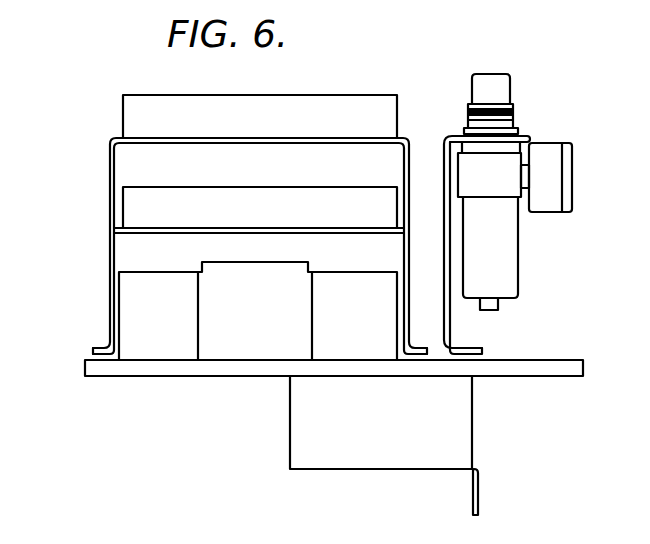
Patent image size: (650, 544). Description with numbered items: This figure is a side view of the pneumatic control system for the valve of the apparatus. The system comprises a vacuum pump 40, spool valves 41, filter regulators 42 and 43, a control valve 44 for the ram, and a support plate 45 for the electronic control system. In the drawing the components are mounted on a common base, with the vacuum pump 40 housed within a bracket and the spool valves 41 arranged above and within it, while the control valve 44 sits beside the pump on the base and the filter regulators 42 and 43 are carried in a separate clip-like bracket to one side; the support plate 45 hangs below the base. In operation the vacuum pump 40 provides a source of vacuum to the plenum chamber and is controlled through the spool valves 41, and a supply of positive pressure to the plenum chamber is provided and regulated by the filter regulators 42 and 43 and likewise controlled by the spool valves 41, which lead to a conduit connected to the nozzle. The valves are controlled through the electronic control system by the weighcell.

The vacuum pump 40 is at (128, 297).
The spool valves 41 is at (132, 123).
The filter regulator 42 is at (508, 182).
The filter regulator 43 is at (513, 38).
The control valve 44 is at (233, 343).
The support plate 45 is at (455, 441).